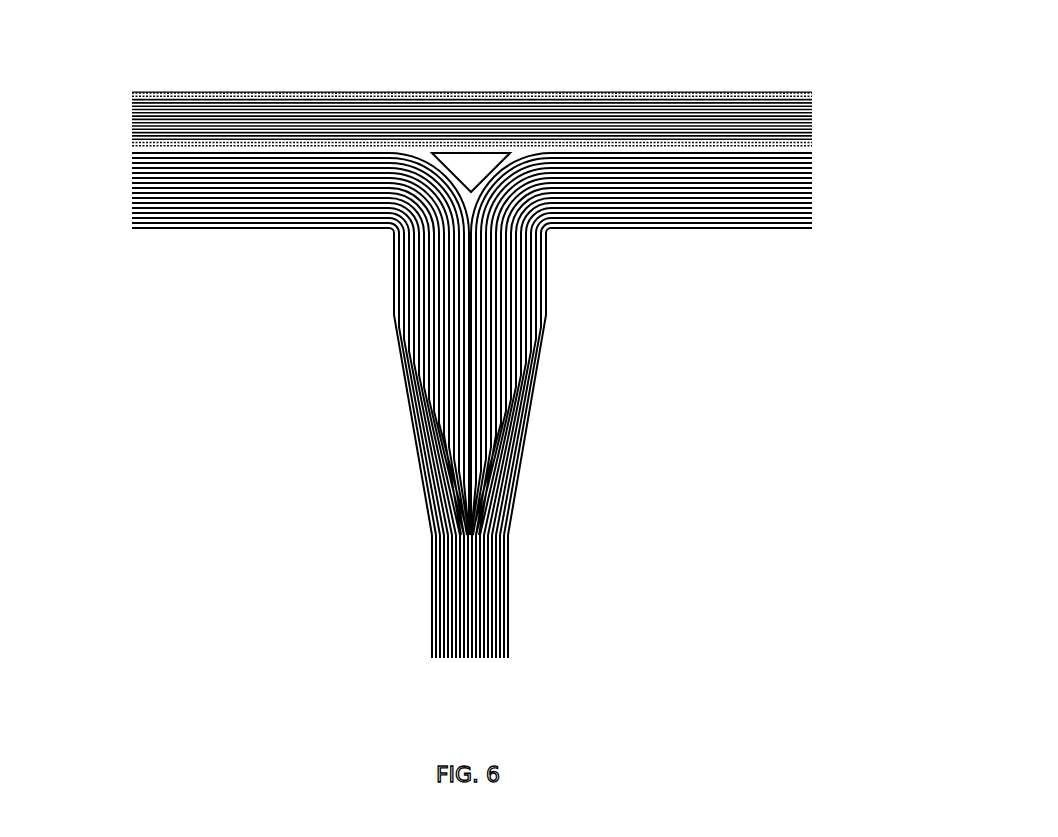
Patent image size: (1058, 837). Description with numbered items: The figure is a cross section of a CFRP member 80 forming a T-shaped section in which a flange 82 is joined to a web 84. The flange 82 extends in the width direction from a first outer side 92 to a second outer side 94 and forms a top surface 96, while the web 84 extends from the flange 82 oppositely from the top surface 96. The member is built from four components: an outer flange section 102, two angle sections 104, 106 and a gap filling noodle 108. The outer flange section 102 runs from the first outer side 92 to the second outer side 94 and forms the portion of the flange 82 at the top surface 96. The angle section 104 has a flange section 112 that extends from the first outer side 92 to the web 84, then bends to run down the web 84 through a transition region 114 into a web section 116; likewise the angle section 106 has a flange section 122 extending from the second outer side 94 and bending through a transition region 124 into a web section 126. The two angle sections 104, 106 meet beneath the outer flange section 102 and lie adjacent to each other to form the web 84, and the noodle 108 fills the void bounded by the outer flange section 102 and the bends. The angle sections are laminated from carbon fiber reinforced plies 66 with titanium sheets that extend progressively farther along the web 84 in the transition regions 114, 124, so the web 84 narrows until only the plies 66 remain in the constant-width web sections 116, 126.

The carbon fiber reinforced plies 66 is at (187, 115).
The CFRP member 80 is at (215, 509).
The flange 82 is at (608, 47).
The web 84 is at (473, 690).
The first outer side 92 is at (99, 86).
The second outer side 94 is at (857, 87).
The top surface 96 is at (257, 92).
The outer flange section 102 is at (815, 93).
The angle section 104 is at (131, 152).
The angle section 106 is at (815, 152).
The gap filling noodle 108 is at (480, 160).
The flange section 112 is at (241, 229).
The transition region 114 is at (383, 233).
The web section 116 is at (383, 538).
The flange section 122 is at (697, 229).
The transition region 124 is at (560, 233).
The web section 126 is at (560, 536).